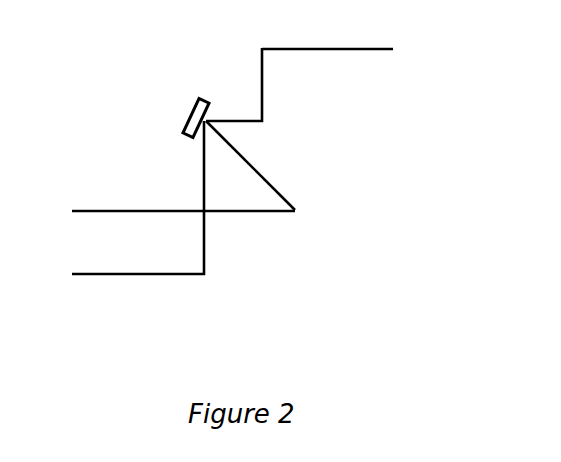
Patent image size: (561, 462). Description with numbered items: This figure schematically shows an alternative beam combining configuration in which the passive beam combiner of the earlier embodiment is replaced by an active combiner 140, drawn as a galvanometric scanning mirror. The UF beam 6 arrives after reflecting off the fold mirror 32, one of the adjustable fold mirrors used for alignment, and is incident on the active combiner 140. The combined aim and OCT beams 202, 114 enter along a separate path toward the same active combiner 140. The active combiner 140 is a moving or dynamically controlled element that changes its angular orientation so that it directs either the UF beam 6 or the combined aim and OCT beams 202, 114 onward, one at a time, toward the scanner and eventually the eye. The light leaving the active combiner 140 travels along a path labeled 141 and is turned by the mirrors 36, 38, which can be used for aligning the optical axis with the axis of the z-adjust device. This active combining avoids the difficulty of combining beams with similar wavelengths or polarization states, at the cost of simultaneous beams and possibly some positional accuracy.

The mirror 38 is at (273, 33).
The mirror 36 is at (252, 133).
The active beam combiner 140 is at (182, 110).
The fold mirror 32 is at (302, 192).
The UF beam 6 is at (122, 208).
The reflected light path 141 is at (222, 257).
The OCT beam 114 is at (138, 297).
The aim beam 202 is at (115, 275).